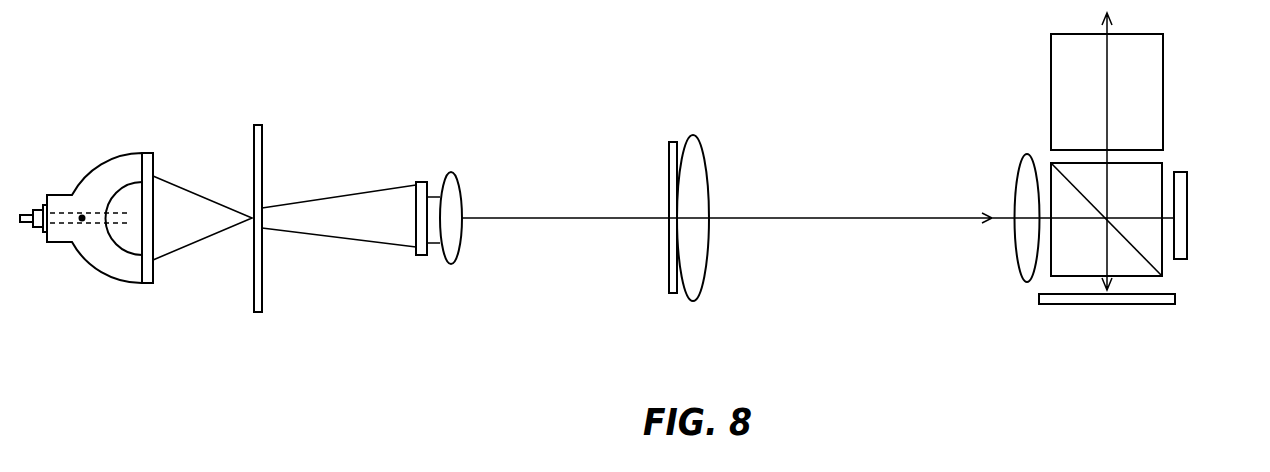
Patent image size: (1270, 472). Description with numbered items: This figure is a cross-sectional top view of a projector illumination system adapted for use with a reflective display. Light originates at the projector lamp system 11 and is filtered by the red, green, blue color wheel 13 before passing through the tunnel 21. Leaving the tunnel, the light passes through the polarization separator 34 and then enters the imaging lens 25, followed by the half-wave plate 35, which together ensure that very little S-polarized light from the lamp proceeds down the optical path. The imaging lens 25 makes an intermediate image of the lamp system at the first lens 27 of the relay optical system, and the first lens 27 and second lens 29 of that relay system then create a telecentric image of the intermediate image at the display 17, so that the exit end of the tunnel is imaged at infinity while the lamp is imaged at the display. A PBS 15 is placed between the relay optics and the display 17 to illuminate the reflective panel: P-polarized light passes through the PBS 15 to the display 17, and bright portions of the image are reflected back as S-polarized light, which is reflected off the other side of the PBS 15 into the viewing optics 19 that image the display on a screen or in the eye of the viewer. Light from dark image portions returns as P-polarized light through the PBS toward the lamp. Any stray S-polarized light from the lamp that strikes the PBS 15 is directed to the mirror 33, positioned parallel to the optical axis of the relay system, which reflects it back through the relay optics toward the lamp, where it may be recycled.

The projector lamp system 11 is at (90, 262).
The color wheel 13 is at (250, 302).
The tunnel 21 is at (316, 200).
The polarization separator 34 is at (420, 182).
The imaging lens 25 is at (452, 262).
The half-wave plate 35 is at (670, 155).
The first lens 27 is at (690, 296).
The second lens 29 is at (1020, 282).
The PBS 15 is at (1162, 266).
The viewing optics 19 is at (1163, 61).
The display 17 is at (1188, 186).
The mirror 33 is at (1142, 305).